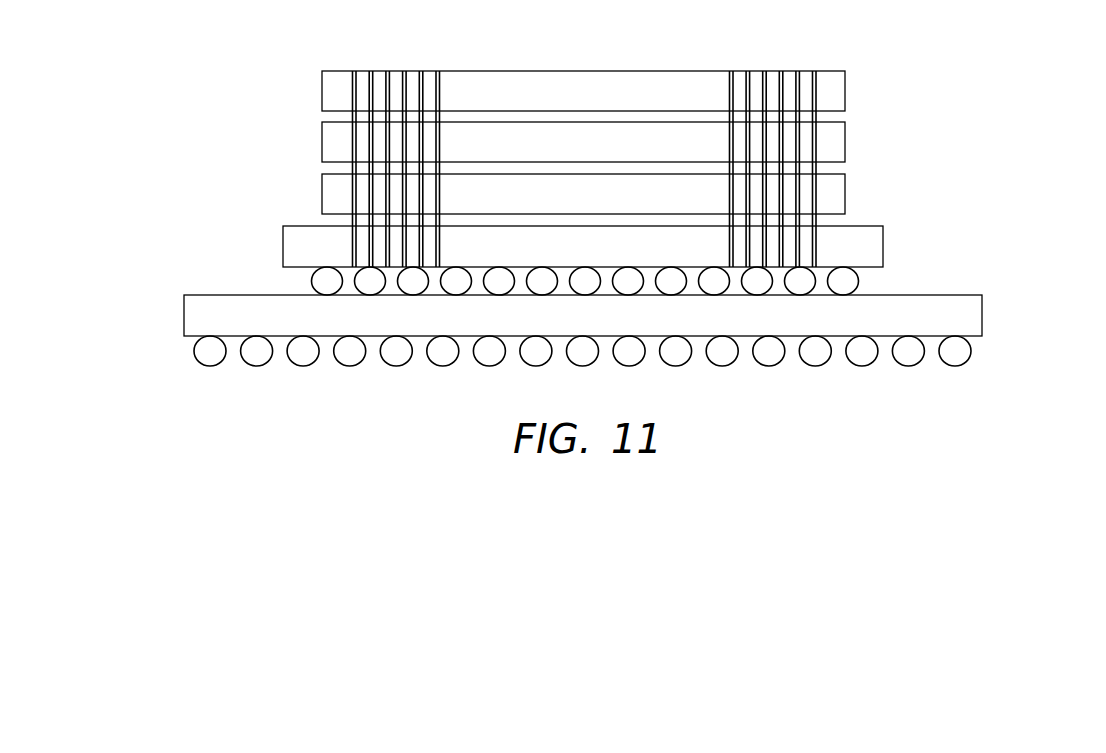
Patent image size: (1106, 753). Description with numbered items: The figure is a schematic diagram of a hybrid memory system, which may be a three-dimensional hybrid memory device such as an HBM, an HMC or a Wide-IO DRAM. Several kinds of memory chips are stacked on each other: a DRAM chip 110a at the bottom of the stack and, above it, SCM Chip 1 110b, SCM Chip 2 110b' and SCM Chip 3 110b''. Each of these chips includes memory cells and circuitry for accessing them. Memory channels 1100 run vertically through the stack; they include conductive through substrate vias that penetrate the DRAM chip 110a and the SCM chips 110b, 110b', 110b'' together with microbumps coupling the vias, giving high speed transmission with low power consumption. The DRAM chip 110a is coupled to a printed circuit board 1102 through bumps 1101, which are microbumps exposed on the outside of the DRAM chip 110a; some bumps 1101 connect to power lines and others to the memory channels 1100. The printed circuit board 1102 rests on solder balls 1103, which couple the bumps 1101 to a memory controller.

The memory channels 1100 is at (352, 194).
The DRAM chip 110a is at (883, 248).
The SCM Chip 1 110b is at (637, 190).
The SCM Chip 2 110b' is at (640, 138).
The SCM Chip 3 110b'' is at (642, 86).
The bumps 1101 is at (858, 281).
The printed circuit board (PCB) 1102 is at (982, 316).
The solder balls 1103 is at (196, 351).